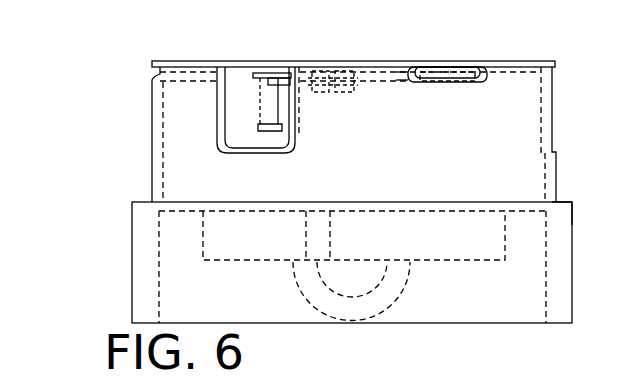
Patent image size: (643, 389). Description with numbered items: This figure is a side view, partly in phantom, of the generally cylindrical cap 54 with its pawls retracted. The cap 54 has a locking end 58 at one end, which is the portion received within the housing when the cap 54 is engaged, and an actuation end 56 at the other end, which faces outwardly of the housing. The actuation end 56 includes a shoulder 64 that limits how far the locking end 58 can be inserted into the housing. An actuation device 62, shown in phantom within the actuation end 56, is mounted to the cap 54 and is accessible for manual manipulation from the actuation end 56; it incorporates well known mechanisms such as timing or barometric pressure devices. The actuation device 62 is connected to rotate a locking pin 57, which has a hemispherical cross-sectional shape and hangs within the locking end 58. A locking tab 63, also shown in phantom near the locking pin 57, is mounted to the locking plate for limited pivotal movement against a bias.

The cap 54 is at (497, 134).
The actuation end 56 is at (557, 323).
The locking pin 57 is at (262, 143).
The locking end 58 is at (520, 60).
The actuation device 62 is at (480, 244).
The locking tab 63 is at (345, 90).
The shoulder 64 is at (568, 200).